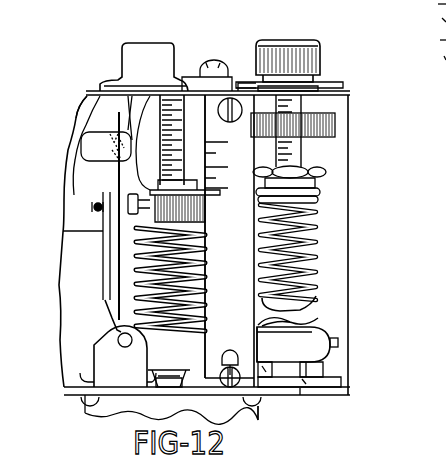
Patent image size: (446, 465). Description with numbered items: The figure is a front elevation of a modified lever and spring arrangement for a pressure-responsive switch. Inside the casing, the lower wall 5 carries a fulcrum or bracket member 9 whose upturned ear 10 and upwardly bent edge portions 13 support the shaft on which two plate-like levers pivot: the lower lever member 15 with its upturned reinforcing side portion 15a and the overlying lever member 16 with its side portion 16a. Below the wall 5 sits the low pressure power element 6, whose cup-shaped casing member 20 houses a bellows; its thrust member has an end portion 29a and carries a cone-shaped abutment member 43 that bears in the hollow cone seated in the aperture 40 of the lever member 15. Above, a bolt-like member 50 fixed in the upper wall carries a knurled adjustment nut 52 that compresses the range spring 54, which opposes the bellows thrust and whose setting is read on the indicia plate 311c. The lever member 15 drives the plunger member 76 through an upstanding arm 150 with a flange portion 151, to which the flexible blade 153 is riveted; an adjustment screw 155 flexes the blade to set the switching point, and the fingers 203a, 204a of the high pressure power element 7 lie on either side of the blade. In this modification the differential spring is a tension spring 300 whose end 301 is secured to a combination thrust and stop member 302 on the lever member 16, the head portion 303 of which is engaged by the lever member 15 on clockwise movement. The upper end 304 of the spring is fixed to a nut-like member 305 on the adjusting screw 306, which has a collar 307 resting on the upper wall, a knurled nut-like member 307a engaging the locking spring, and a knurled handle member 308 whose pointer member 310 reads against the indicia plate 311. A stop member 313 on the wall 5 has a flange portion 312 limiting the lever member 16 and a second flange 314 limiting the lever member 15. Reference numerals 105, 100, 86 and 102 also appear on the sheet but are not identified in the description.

The high pressure power element 7 is at (158, 43).
The downwardly projecting finger 203a is at (140, 104).
The downwardly projecting finger 204a is at (88, 112).
The plunger member 76 is at (82, 148).
The flexible blade 153 is at (118, 168).
The adjustment nut 52 is at (156, 202).
The bolt-like member 50 is at (164, 128).
The adjustment screw 155 is at (93, 207).
The flange portion 151 is at (71, 231).
The helical coil spring 54 is at (135, 243).
The upstanding arm 150 is at (125, 268).
The fulcrum or bracket member 9 is at (98, 338).
The upwardly bent edge portions 13 is at (88, 365).
The upturned ear 10 is at (134, 368).
The upturned reinforcing side portion 15a is at (176, 350).
The end portion of thrust member 29a is at (181, 372).
The cone-shaped abutment member 43 is at (172, 380).
The cup-shaped casing member 20 is at (220, 165).
The aperture 40 is at (206, 212).
The indicia plate 311c is at (238, 278).
The indicia plate 311 is at (240, 83).
The knurled handle member 308 is at (275, 45).
The pointer member 310 is at (330, 76).
The flange or collar portion 307 is at (302, 94).
The knurled nut-like member 307a is at (336, 126).
The adjusting screw 306 is at (302, 152).
The nut-like member 305 is at (327, 173).
The upper end of tension spring 304 is at (321, 192).
The tension spring 300 is at (320, 235).
The combination thrust and stop member 302 is at (314, 308).
The end of tension spring 301 is at (320, 319).
The upturned reinforcing side portion 16a is at (292, 350).
The flange portion 312 is at (339, 342).
The lever member 16 is at (338, 353).
The stop member 313 is at (328, 372).
The second flange 314 is at (340, 379).
The lever member 15 is at (265, 371).
The flange or head portion 303 is at (304, 378).
The lower wall 5 is at (300, 395).
The low pressure power element 6 is at (258, 418).
The element 105 is at (429, 6).
The element 100 is at (431, 23).
The element 86 is at (433, 41).
The element 102 is at (436, 60).